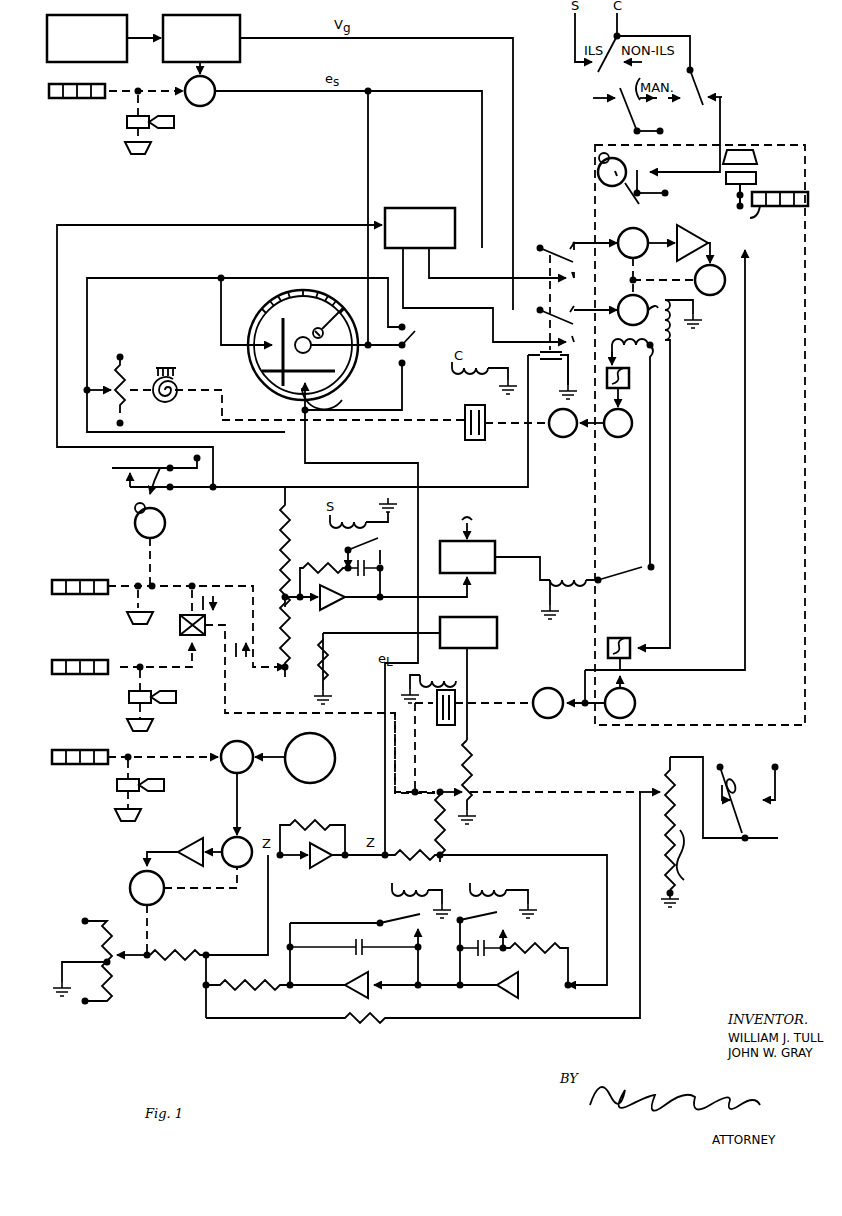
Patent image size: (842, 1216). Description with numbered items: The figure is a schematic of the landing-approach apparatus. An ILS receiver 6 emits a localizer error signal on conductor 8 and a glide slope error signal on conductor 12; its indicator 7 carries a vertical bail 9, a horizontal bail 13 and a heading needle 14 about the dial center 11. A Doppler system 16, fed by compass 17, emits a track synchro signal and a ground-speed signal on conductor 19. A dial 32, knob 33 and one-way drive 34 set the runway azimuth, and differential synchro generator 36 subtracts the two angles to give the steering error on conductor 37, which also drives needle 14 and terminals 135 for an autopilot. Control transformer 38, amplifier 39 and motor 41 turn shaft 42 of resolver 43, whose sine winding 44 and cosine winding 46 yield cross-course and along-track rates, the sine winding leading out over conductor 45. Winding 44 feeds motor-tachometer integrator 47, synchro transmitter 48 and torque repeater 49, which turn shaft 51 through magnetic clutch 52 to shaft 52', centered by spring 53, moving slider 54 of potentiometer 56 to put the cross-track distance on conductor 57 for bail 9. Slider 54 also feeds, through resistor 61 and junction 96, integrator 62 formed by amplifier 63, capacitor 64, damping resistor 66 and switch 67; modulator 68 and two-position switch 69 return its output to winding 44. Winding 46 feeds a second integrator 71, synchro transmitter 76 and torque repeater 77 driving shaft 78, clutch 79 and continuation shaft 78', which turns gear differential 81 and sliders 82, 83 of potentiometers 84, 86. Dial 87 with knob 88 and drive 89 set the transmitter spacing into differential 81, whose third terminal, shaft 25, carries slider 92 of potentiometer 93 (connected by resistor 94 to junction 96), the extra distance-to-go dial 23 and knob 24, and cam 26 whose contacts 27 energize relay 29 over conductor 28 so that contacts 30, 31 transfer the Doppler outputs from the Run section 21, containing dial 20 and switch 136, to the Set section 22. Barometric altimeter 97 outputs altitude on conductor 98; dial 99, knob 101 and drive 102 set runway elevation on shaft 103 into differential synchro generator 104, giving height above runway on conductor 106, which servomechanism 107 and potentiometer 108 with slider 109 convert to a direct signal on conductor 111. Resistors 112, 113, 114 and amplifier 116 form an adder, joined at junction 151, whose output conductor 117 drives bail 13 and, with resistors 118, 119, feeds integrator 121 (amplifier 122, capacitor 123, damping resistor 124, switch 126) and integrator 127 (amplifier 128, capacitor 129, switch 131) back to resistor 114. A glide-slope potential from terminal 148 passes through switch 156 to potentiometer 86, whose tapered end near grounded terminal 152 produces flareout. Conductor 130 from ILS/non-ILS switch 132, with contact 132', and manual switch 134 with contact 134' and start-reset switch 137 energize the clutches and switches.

The ILS radio receiver 6 is at (493, 624).
The instrument face 7 is at (262, 310).
The conductor 8 is at (392, 627).
The vertical bail 9 is at (281, 360).
The center of the dial 11 is at (301, 356).
The conductor 12 is at (472, 719).
The horizontal bail 13 is at (315, 369).
The needle 14 is at (316, 328).
The Doppler navigational system 16 is at (210, 16).
The compass 17 is at (108, 16).
The conductor 19 is at (292, 32).
The distance-to-go dial 20 is at (765, 187).
The Run section 21 is at (598, 169).
The Set section 22 is at (410, 203).
The distance-to-go dial 23 is at (86, 596).
The setting knob 24 is at (127, 622).
The shaft 25 is at (156, 556).
The cam 26 is at (164, 519).
The contacts 27 is at (163, 465).
The conductor 28 is at (250, 482).
The relay 29 is at (548, 366).
The relay contact 30 is at (539, 245).
The relay contact 31 is at (564, 312).
The dial 32 is at (84, 101).
The setting knob 33 is at (125, 148).
The one-way drive 34 is at (125, 122).
The differential synchro generator 36 is at (212, 100).
The conductor 37 is at (285, 91).
The control transformer 38 is at (638, 228).
The amplifier 39 is at (672, 229).
The motor 41 is at (712, 293).
The motor shaft 42 is at (671, 278).
The resolver 43 is at (622, 279).
The sine winding 44 is at (620, 336).
The line 45 is at (655, 353).
The cosine winding 46 is at (673, 466).
The motor-tachometer integrator 47 is at (626, 393).
The synchro transmitter 48 is at (622, 438).
The torque repeater 49 is at (562, 410).
The shaft 51 is at (514, 426).
The magnetic clutch 52 is at (385, 434).
The shaft 52' is at (448, 424).
The centering spring 53 is at (174, 403).
The slider 54 is at (106, 396).
The potentiometer 56 is at (124, 381).
The conductor 57 is at (87, 339).
The resistor 61 is at (277, 557).
The integrator 62 is at (393, 589).
The amplifier 63 is at (334, 602).
The capacitor 64 is at (358, 574).
The damping resistor 66 is at (334, 561).
The switch 67 is at (377, 542).
The modulator 68 is at (476, 543).
The two-position switch 69 is at (619, 567).
The motor-tachometer integrator 71 is at (626, 636).
The synchro transmitter 76 is at (639, 700).
The torque repeater 77 is at (550, 694).
The shaft 78 is at (503, 690).
The continuation shaft 78' is at (425, 749).
The magnetic clutch 79 is at (440, 728).
The gear differential 81 is at (199, 640).
The slider 82 is at (454, 785).
The slider 83 is at (643, 791).
The potentiometer 84 is at (474, 759).
The potentiometer 86 is at (677, 811).
The dial 87 is at (70, 661).
The setting knob 88 is at (127, 725).
The one-way drive 89 is at (128, 697).
The slider 92 is at (317, 661).
The potentiometer 93 is at (327, 659).
The resistor 94 is at (281, 633).
The junction 96 is at (283, 594).
The barometric altimeter 97 is at (335, 748).
The conductor 98 is at (276, 745).
The dial 99 is at (88, 768).
The knob 101 is at (142, 825).
The one-way drive 102 is at (117, 785).
The shaft 103 is at (192, 757).
The differential synchro generator 104 is at (230, 770).
The conductor 106 is at (237, 805).
The servomechanism 107 is at (191, 871).
The potentiometer 108 is at (100, 964).
The slider 109 is at (121, 961).
The conductor 111 is at (156, 961).
The resistor 112 is at (199, 948).
The resistor 113 is at (346, 1022).
The resistor 114 is at (257, 993).
The amplifier 116 is at (313, 839).
The conductor 117 is at (330, 398).
The resistor 118 is at (435, 864).
The resistor 119 is at (434, 826).
The integrator 121 is at (523, 922).
The amplifier 122 is at (512, 998).
The capacitor 123 is at (496, 970).
The damping resistor 124 is at (540, 942).
The switch 126 is at (506, 918).
The second integrator 127 is at (334, 956).
The amplifier 128 is at (352, 1000).
The capacitor 129 is at (353, 945).
The conductor 130 is at (617, 22).
The switch 131 is at (374, 914).
The switch 132 is at (613, 105).
The contact 132' is at (587, 61).
The manual switch 134 is at (668, 123).
The contact 134' is at (735, 90).
The terminals 135 is at (412, 346).
The switch 136 is at (685, 143).
The start reset switch 137 is at (596, 123).
The terminal 148 is at (690, 748).
The junction 151 is at (208, 955).
The grounded terminal 152 is at (678, 893).
The switch 156 is at (757, 789).